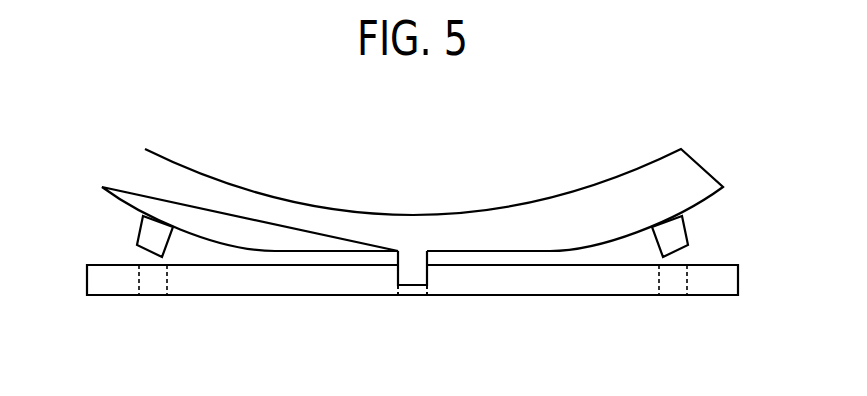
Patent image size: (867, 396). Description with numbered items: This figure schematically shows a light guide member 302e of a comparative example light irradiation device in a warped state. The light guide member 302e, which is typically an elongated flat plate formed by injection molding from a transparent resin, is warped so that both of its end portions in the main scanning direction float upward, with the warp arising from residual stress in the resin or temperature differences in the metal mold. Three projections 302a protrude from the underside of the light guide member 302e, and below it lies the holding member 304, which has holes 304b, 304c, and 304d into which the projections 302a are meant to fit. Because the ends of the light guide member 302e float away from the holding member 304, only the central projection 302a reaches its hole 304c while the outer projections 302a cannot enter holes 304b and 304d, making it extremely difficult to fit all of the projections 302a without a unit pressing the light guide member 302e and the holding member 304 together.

The projection 302a is at (150, 231).
The light guide member 302e is at (412, 225).
The holding member 304 is at (283, 282).
The hole 304b is at (152, 280).
The hole 304c is at (415, 288).
The hole 304d is at (673, 282).